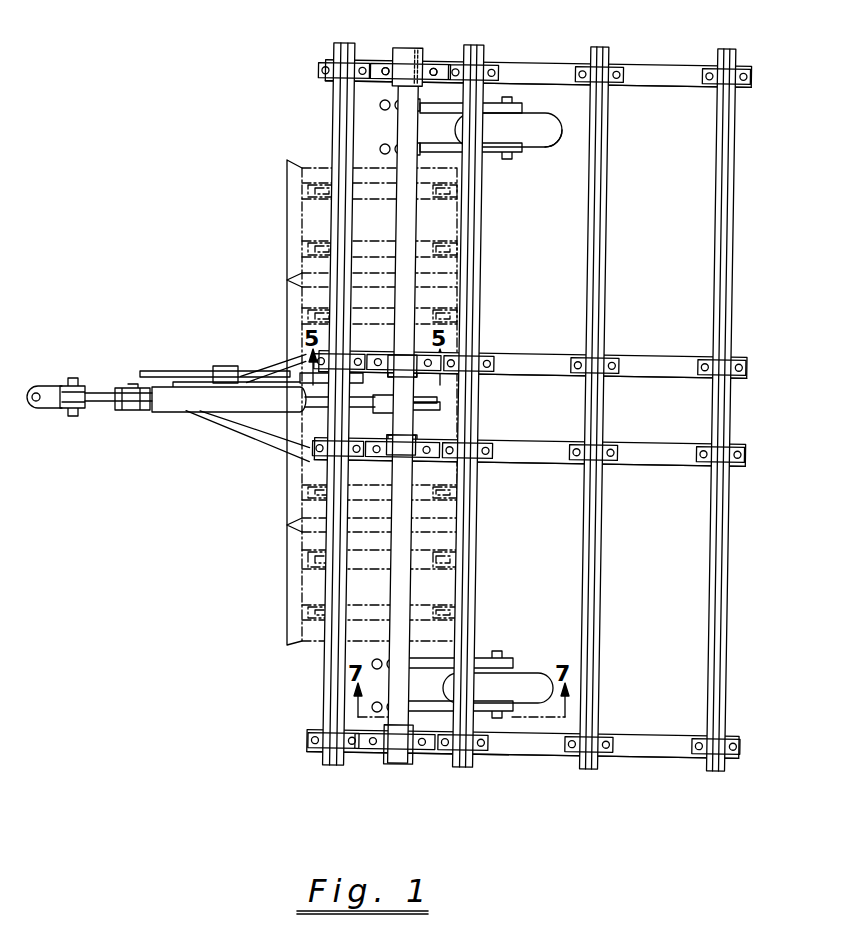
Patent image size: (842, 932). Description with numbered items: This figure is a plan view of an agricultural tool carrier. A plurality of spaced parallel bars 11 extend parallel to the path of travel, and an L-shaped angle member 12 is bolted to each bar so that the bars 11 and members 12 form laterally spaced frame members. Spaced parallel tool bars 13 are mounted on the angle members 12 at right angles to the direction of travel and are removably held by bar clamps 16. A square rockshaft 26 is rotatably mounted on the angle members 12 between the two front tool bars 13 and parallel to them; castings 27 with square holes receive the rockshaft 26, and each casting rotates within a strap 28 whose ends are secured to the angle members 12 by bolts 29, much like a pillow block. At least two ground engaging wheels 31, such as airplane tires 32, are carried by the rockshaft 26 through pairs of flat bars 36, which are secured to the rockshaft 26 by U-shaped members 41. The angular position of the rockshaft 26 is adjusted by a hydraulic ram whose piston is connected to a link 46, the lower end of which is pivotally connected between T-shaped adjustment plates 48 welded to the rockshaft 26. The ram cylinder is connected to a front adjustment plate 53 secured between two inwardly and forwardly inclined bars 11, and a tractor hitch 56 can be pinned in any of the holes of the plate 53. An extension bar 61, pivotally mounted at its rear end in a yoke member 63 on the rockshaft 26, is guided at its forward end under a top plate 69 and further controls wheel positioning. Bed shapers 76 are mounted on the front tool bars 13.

The bar 11 is at (655, 66).
The L-shaped angle member 12 is at (668, 85).
The tool bar 13 is at (730, 225).
The bar clamp 16 is at (712, 86).
The rockshaft 26 is at (414, 284).
The casting 27 is at (410, 62).
The strap 28 is at (405, 50).
The bolt 29 is at (385, 68).
The ground engaging wheel 31 is at (542, 147).
The airplane tire 32 is at (540, 137).
The flat bar 36 is at (455, 146).
The U-shaped member 41 is at (392, 147).
The link 46 is at (420, 446).
The T-shaped adjustment plate 48 is at (437, 410).
The front adjustment plate 53 is at (108, 392).
The tractor hitch 56 is at (52, 388).
The extension bar 61 is at (168, 370).
The yoke member 63 is at (398, 360).
The top plate 69 is at (230, 367).
The bed shaper 76 is at (288, 490).